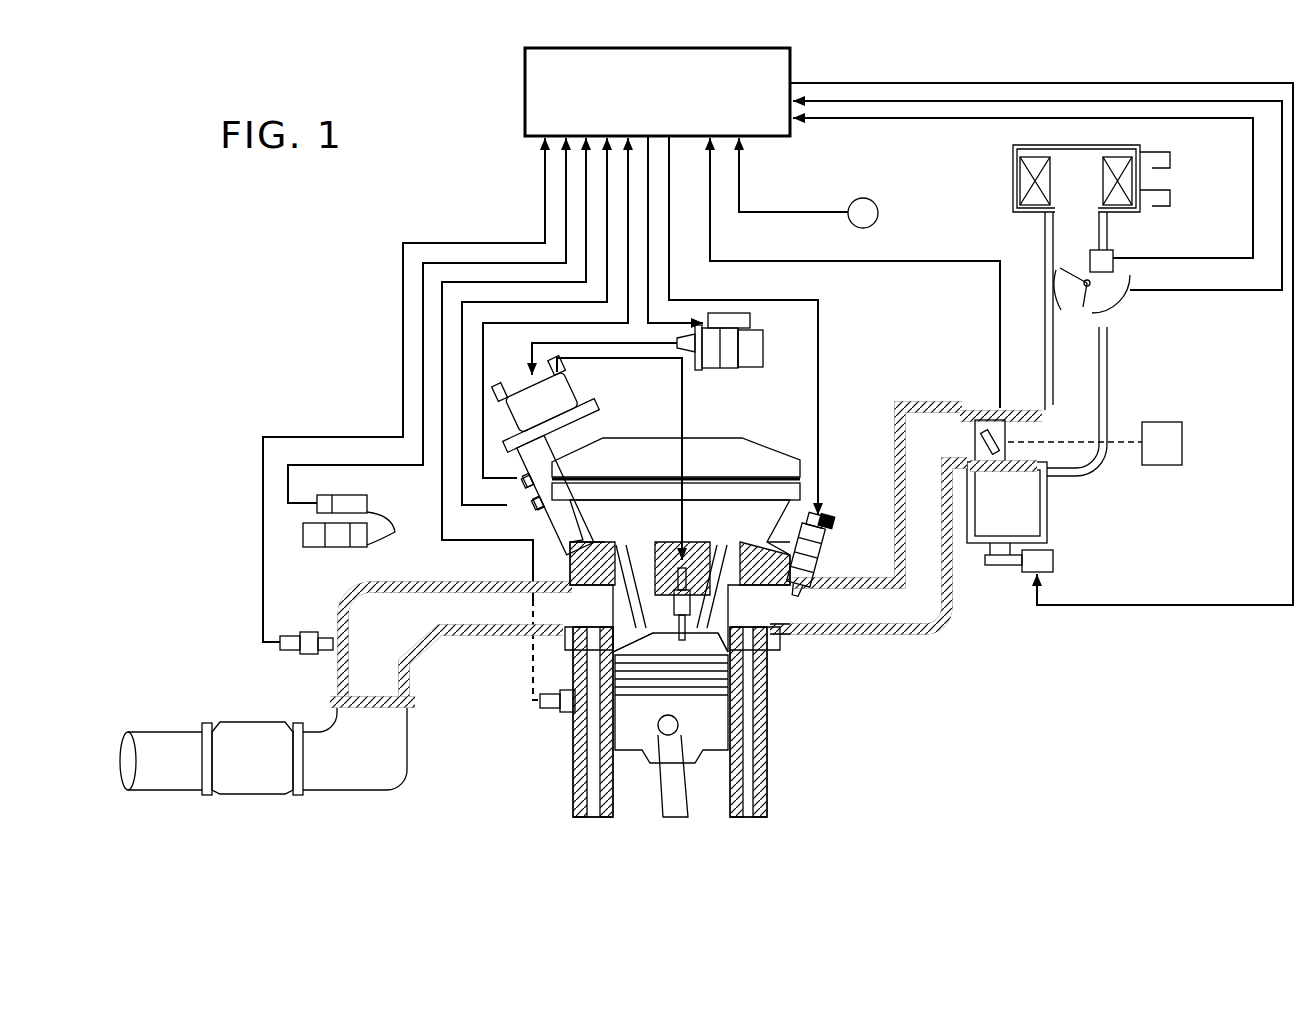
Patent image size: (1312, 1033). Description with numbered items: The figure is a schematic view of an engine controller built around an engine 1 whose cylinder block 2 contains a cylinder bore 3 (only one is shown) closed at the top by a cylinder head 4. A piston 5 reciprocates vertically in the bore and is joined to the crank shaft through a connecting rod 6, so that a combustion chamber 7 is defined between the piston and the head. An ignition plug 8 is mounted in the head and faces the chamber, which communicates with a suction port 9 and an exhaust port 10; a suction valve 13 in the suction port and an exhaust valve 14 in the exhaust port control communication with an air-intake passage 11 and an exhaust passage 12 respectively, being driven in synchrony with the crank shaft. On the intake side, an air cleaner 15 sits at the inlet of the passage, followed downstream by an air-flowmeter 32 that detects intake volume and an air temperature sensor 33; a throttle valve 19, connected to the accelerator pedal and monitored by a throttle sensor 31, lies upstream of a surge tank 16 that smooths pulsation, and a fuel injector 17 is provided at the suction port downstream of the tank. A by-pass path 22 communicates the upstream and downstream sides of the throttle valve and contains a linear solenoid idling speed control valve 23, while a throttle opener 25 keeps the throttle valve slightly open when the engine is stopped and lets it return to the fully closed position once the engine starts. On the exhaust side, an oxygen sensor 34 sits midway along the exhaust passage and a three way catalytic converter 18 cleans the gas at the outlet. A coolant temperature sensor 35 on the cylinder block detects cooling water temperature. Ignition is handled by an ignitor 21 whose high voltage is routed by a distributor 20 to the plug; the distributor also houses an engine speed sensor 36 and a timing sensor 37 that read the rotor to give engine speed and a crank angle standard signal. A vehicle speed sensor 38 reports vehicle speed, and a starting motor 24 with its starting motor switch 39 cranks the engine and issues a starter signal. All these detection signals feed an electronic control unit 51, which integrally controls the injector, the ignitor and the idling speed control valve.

The engine 1 is at (678, 644).
The cylinder block 2 is at (765, 722).
The cylinder bore 3 is at (605, 790).
The cylinder head 4 is at (676, 545).
The piston 5 is at (605, 740).
The connecting rod 6 is at (668, 805).
The combustion chamber 7 is at (757, 688).
The ignition plug 8 is at (686, 560).
The suction port 9 is at (780, 636).
The exhaust port 10 is at (576, 650).
The air-intake passage 11 is at (942, 615).
The exhaust passage 12 is at (458, 636).
The suction valve 13 is at (720, 608).
The exhaust valve 14 is at (622, 608).
The air cleaner 15 is at (1020, 172).
The surge tank 16 is at (905, 410).
The fuel injector 17 is at (826, 536).
The three way catalytic converter 18 is at (253, 728).
The throttle valve 19 is at (972, 437).
The distributor 20 is at (575, 402).
The ignitor 21 is at (752, 375).
The by-pass path 22 is at (1047, 510).
The idling speed control valve (ISCV) 23 is at (1053, 562).
The starting motor 24 is at (372, 552).
The throttle opener 25 is at (1162, 465).
The throttle sensor 31 is at (990, 412).
The air-flowmeter 32 is at (1128, 303).
The air temperature sensor 33 is at (1113, 252).
The oxygen sensor 34 is at (312, 634).
The coolant temperature sensor 35 is at (540, 708).
The engine speed sensor 36 is at (517, 493).
The timing sensor 37 is at (526, 514).
The vehicle speed sensor 38 is at (886, 213).
The starting motor switch 39 is at (340, 492).
The electronic control unit (ECU) 51 is at (525, 86).